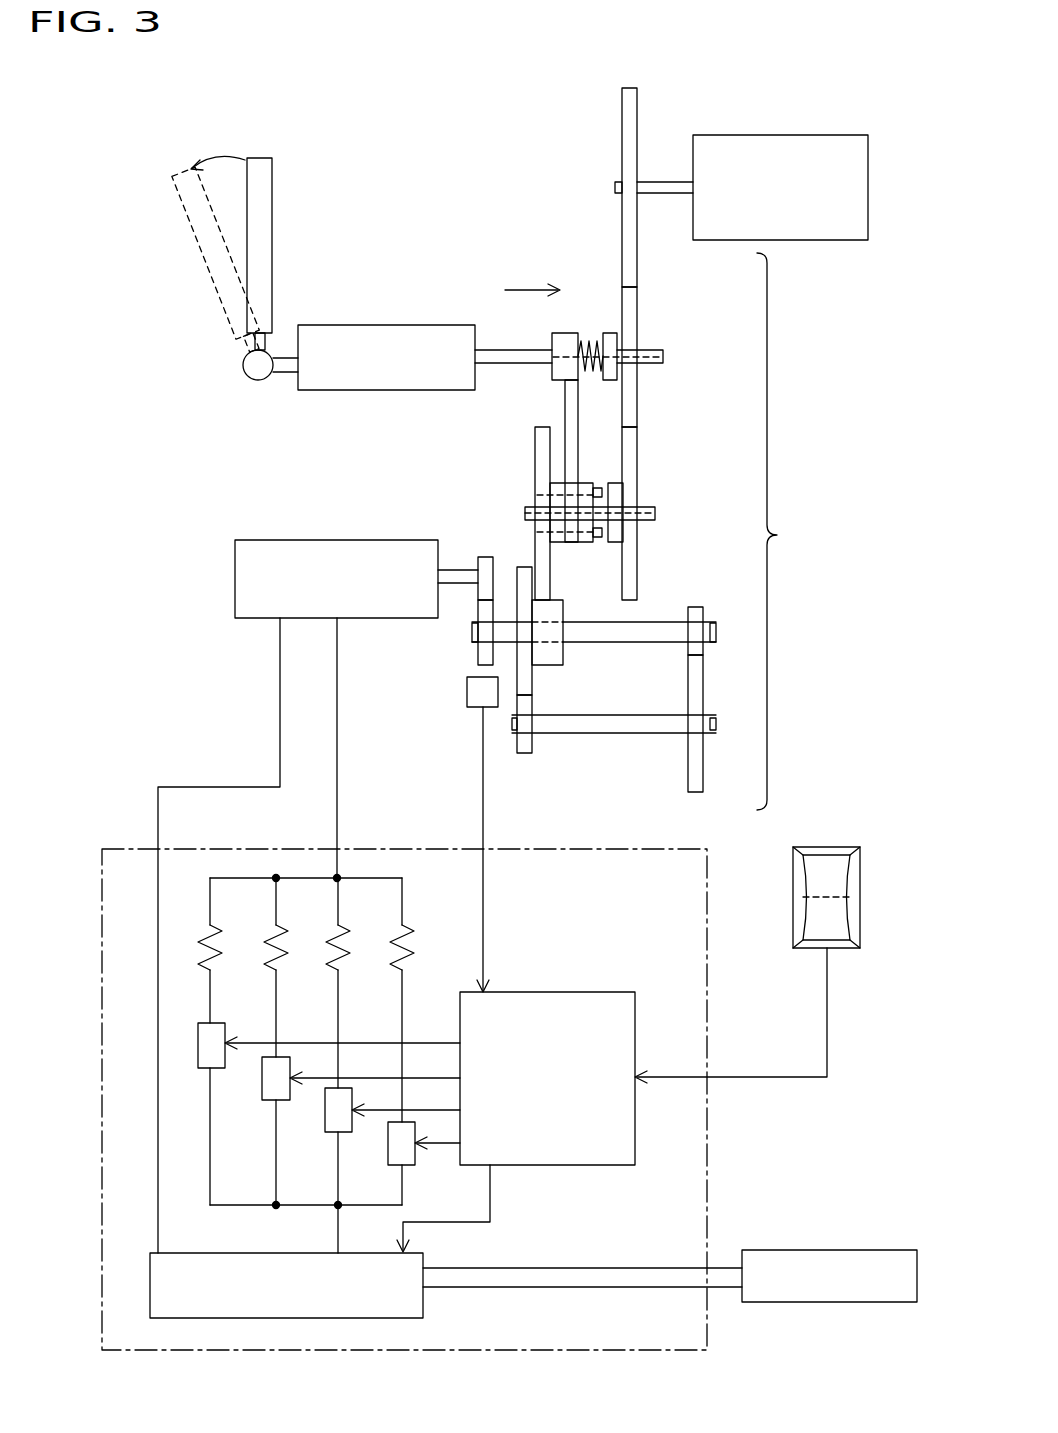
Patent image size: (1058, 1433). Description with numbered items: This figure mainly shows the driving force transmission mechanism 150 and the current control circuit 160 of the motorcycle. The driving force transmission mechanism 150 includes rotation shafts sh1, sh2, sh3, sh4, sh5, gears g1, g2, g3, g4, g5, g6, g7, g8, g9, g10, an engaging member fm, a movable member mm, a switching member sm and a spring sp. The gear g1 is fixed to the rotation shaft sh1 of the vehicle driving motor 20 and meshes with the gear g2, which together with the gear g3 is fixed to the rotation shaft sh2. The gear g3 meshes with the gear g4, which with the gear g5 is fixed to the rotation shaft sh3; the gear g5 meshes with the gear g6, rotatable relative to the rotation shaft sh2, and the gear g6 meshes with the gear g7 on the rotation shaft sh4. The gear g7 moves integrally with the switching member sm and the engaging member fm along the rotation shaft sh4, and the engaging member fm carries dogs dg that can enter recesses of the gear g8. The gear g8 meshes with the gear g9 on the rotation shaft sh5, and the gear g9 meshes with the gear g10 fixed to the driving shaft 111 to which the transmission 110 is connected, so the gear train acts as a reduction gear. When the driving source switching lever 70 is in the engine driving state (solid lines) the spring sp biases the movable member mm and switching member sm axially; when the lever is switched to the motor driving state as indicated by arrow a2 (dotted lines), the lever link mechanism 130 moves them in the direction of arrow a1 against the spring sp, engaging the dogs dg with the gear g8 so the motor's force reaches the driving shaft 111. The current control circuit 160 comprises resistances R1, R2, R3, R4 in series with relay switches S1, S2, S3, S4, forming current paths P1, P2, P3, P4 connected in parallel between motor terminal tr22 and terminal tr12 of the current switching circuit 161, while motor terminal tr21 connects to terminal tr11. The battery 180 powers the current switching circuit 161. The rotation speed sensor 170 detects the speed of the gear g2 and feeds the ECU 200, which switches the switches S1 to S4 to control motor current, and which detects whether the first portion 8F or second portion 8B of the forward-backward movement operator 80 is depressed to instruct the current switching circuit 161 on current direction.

The driving source switching lever 70 is at (272, 172).
The arrow a2 is at (219, 234).
The lever link mechanism 130 is at (310, 325).
The movable member mm is at (497, 350).
The switching member sm is at (560, 374).
The spring sp is at (592, 340).
The arrow a1 is at (537, 288).
The gear g10 is at (637, 253).
The gear g9 is at (637, 410).
The gear g8 is at (637, 468).
The driving shaft 111 is at (665, 182).
The transmission 110 is at (810, 135).
The rotation shaft sh5 is at (655, 348).
The gear g7 is at (535, 440).
The engaging member fm is at (593, 545).
The dogs dg is at (598, 488).
The rotation shaft sh4 is at (655, 507).
The vehicle driving motor 20 is at (272, 540).
The rotation shaft sh1 is at (456, 570).
The gear g1 is at (484, 557).
The gear g2 is at (478, 655).
The rotation shaft sh2 is at (614, 645).
The gear g6 is at (532, 680).
The gear g5 is at (532, 745).
The rotation shaft sh3 is at (594, 735).
The gear g3 is at (703, 608).
The gear g4 is at (688, 785).
The driving force transmission mechanism 150 is at (791, 531).
The rotation speed sensor 170 is at (467, 697).
The terminal tr21 is at (278, 620).
The terminal tr22 is at (338, 620).
The current control circuit 160 is at (123, 848).
The resistance R1 is at (210, 925).
The resistance R2 is at (276, 925).
The resistance R3 is at (338, 925).
The resistance R4 is at (402, 925).
The current path P1 is at (206, 1017).
The current path P2 is at (272, 1017).
The current path P3 is at (334, 1017).
The current path P4 is at (398, 1017).
The switch S1 is at (205, 1068).
The switch S2 is at (273, 1100).
The switch S3 is at (333, 1132).
The switch S4 is at (388, 1140).
The terminal tr11 is at (160, 1252).
The terminal tr12 is at (336, 1252).
The ECU 200 is at (592, 992).
The current switching circuit 161 is at (157, 1318).
The battery 180 is at (785, 1250).
The forward-backward movement operator 80 is at (840, 847).
The first portion 8F is at (820, 870).
The second portion 8B is at (820, 912).